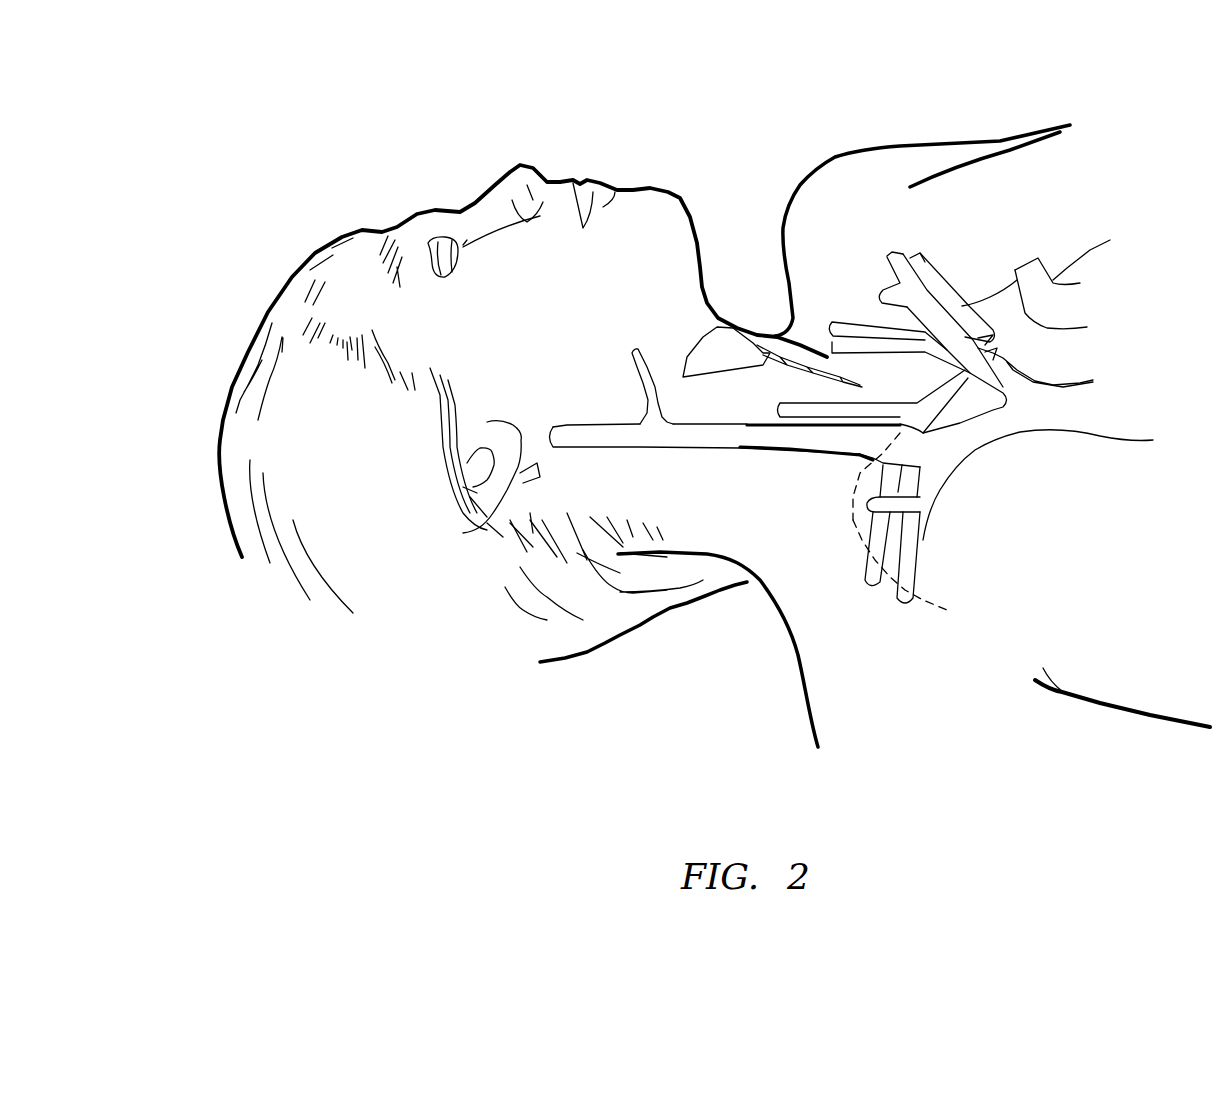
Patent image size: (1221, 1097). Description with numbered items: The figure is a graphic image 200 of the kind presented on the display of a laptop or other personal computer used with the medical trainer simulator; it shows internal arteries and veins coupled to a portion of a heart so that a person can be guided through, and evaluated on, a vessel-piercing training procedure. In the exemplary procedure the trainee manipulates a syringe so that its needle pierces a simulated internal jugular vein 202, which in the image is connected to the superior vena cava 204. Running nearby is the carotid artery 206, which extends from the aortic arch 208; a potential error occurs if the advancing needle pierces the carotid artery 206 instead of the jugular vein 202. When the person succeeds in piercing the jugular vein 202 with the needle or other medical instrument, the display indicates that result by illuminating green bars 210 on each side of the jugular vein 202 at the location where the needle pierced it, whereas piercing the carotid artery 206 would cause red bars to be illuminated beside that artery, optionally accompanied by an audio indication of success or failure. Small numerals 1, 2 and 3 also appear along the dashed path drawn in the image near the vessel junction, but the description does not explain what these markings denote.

The graphic image 200 is at (362, 828).
The internal jugular vein 202 is at (683, 437).
The superior vena cava 204 is at (1033, 430).
The carotid artery 206 is at (810, 410).
The aortic arch 208 is at (1003, 285).
The green bars 210 is at (797, 457).
The position 1 is at (901, 534).
The position 2 is at (866, 497).
The position 3 is at (455, 655).